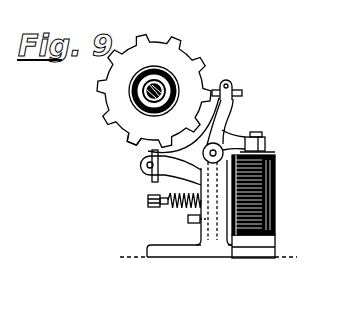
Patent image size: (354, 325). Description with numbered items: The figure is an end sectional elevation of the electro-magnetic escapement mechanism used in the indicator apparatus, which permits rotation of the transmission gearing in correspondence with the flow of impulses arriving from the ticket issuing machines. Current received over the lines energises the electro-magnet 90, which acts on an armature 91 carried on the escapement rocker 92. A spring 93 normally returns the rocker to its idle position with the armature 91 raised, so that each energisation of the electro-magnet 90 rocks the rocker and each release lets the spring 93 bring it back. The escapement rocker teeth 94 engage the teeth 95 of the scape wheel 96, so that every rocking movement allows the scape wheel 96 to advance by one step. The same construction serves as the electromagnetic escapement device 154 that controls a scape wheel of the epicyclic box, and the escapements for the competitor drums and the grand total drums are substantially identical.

The electro-magnet 90 is at (276, 181).
The armature 91 is at (264, 147).
The escapement rocker 92 is at (228, 123).
The spring 93 is at (168, 205).
The escapement rocker teeth 94 is at (215, 87).
The teeth 95 is at (184, 44).
The scape wheel 96 is at (134, 128).
The electromagnetic escapement device 154 is at (260, 87).